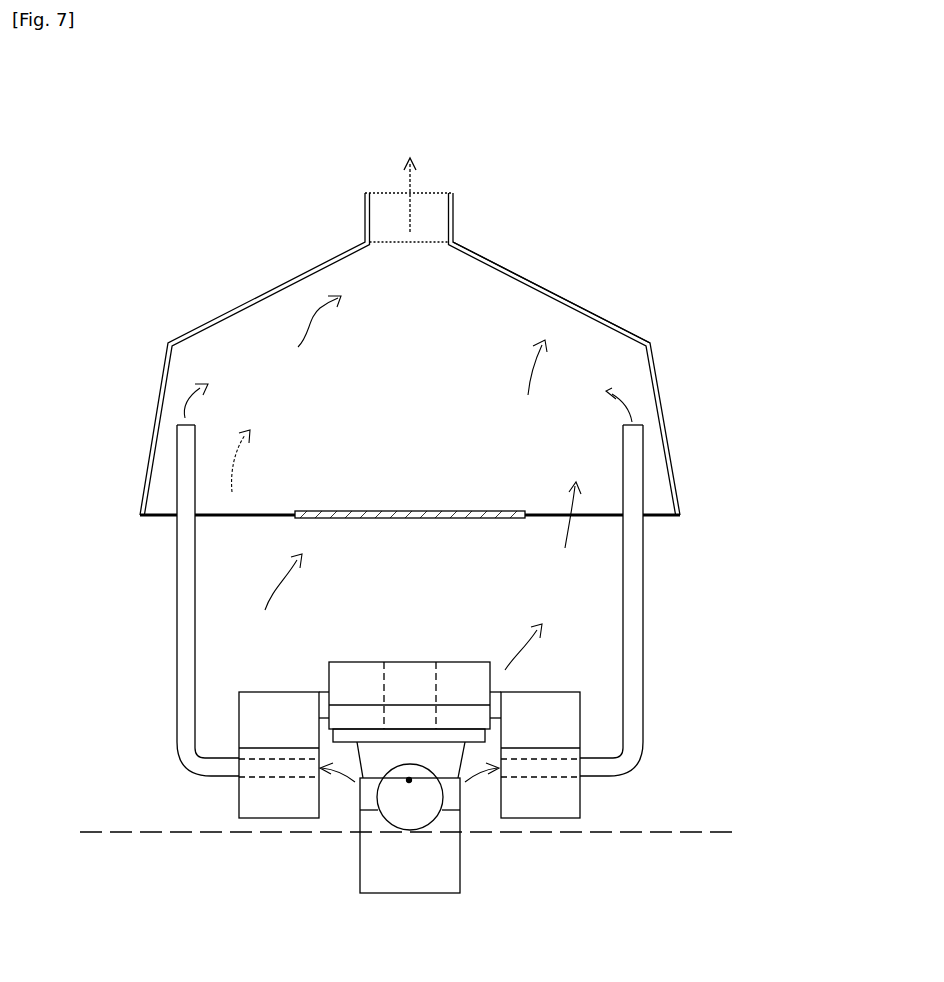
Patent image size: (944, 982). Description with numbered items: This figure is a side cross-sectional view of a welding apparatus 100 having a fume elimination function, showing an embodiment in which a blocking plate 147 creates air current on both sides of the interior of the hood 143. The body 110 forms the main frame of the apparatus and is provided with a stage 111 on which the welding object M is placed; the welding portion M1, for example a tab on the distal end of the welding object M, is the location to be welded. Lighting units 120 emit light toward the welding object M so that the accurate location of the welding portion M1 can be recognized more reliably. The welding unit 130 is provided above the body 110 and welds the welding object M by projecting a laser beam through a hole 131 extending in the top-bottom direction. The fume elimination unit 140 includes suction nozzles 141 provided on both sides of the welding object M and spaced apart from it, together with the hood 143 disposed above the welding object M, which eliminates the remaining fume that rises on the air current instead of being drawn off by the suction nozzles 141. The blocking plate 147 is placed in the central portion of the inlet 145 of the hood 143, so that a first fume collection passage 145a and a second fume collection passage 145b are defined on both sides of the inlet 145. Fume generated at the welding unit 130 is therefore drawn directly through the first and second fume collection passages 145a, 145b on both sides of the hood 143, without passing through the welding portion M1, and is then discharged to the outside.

The welding apparatus 100 is at (570, 245).
The body 110 is at (278, 705).
The stage 111 is at (687, 832).
The lighting unit 120 is at (322, 800).
The welding unit 130 is at (405, 652).
The hole 131 is at (435, 673).
The fume elimination unit 140 is at (168, 567).
The suction nozzle 141 is at (280, 773).
The hood 143 is at (607, 318).
The inlet 145 is at (655, 515).
The first fume collection passage 145a is at (248, 505).
The second fume collection passage 145b is at (593, 493).
The blocking plate 147 is at (357, 510).
The welding object M is at (407, 828).
The welding portion M1 is at (409, 783).